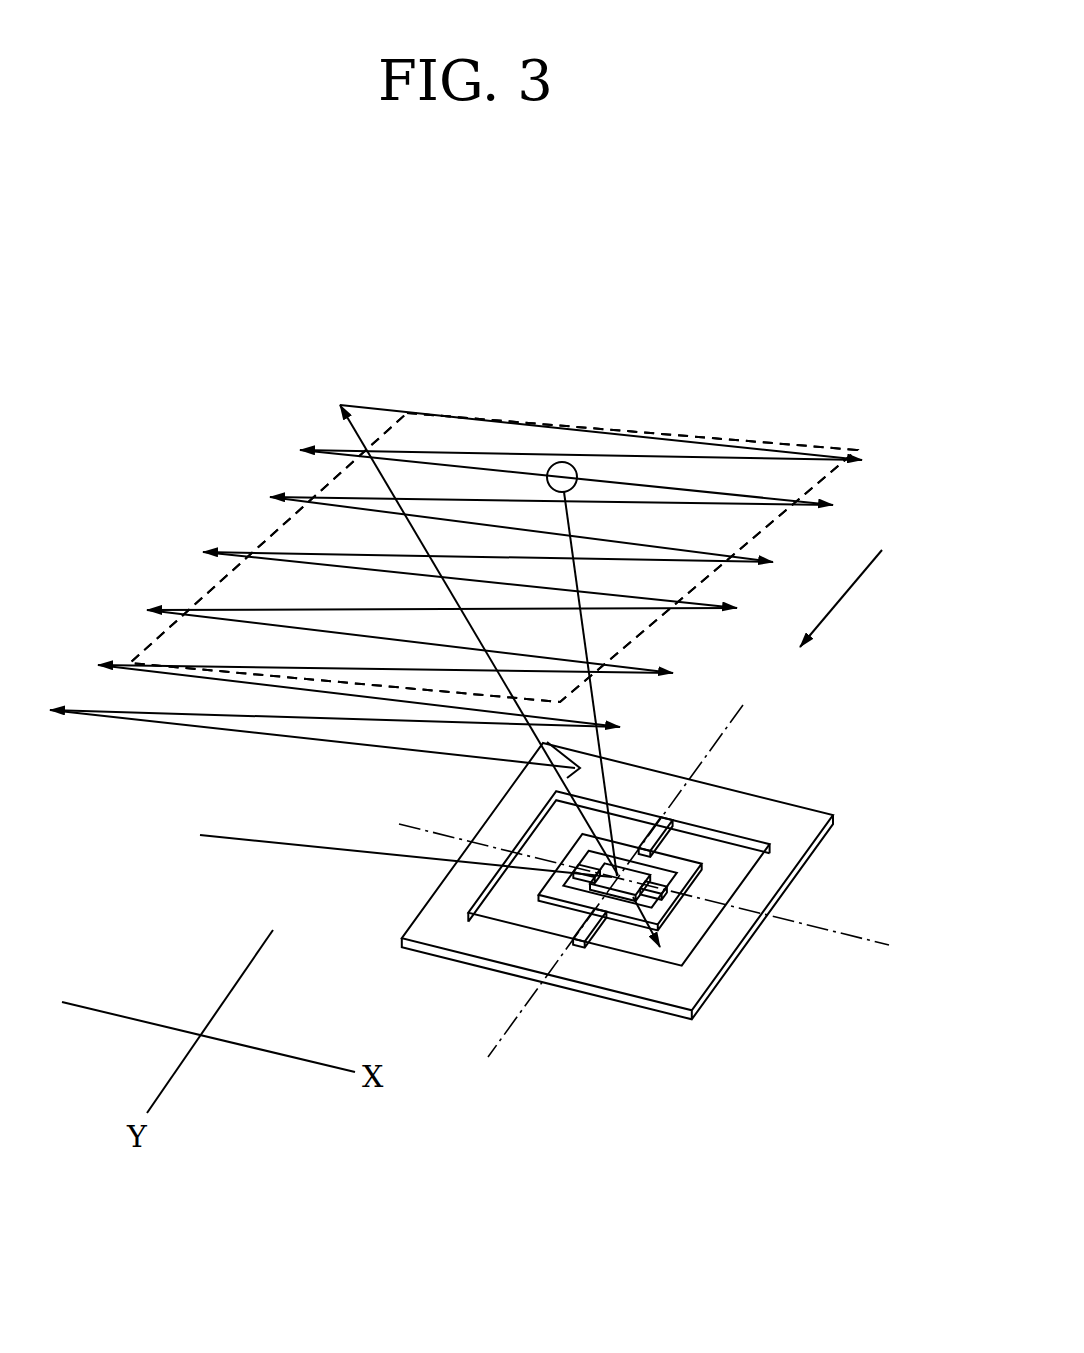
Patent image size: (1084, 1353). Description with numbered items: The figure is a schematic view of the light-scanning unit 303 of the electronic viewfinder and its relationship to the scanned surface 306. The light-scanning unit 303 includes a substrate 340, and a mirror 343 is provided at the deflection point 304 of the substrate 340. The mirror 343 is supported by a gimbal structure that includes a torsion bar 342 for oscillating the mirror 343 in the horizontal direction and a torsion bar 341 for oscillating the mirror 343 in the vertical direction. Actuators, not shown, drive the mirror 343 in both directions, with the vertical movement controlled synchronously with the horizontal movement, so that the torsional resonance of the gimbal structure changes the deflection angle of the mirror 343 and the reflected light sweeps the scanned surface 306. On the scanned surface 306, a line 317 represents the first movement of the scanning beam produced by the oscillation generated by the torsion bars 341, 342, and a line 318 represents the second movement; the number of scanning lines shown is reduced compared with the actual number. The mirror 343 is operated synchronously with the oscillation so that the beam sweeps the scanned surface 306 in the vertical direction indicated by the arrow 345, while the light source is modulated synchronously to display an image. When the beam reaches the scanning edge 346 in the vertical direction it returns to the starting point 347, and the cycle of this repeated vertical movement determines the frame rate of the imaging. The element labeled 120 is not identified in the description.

The scanned surface 306 is at (198, 362).
The starting point 347 is at (338, 404).
The line 317 is at (493, 529).
The line 318 is at (478, 457).
The arrow 345 is at (854, 598).
The scanning edge 346 is at (562, 777).
The light-scanning unit 303 is at (669, 965).
The substrate 340 is at (743, 810).
The mirror 343 is at (687, 863).
The torsion bar 342 is at (643, 852).
The torsion bar 341 is at (765, 915).
The mirror 120 is at (628, 897).
The deflection point 304 is at (668, 935).